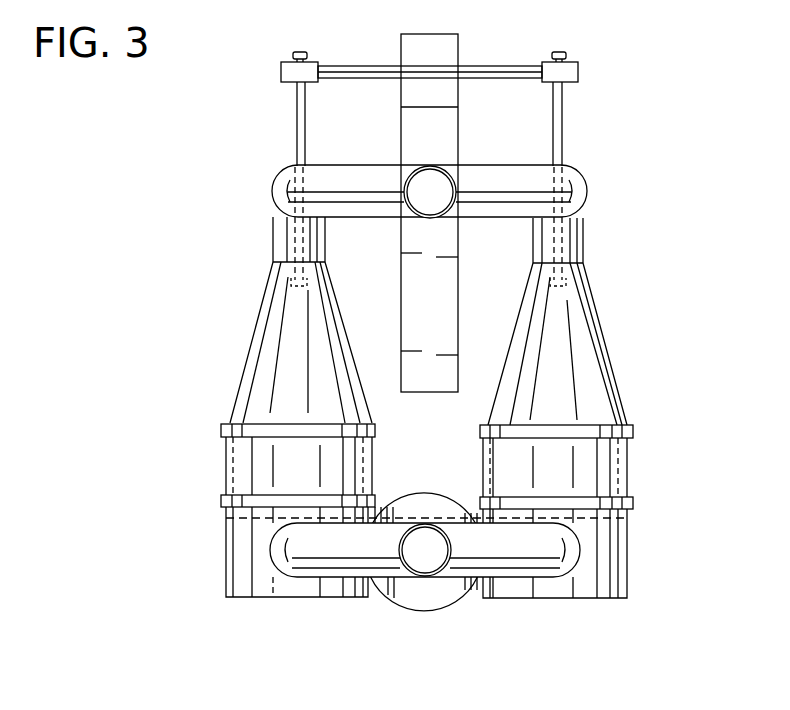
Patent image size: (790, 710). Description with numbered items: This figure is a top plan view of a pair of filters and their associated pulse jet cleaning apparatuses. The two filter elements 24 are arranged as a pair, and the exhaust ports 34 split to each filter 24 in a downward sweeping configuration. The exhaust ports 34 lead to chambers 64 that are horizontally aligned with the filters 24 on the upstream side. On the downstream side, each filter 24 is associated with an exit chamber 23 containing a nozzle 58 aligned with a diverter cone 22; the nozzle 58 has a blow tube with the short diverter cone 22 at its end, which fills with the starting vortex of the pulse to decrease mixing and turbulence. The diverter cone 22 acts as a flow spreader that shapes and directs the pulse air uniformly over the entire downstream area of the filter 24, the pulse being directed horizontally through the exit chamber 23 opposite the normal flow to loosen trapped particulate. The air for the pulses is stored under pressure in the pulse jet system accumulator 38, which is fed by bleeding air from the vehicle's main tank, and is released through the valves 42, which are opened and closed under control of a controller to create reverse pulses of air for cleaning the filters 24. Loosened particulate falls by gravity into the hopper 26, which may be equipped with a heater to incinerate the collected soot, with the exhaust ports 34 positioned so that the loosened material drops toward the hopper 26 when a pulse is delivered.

The pulse jet system accumulator 38 is at (428, 40).
The valves 42 is at (281, 68).
The nozzles 58 is at (282, 228).
The diverter cones 22 is at (290, 283).
The exit chambers 23 is at (252, 378).
The filter elements 24 is at (240, 470).
The hopper 26 is at (437, 603).
The chambers 64 is at (240, 575).
The exhaust ports 34 is at (532, 553).